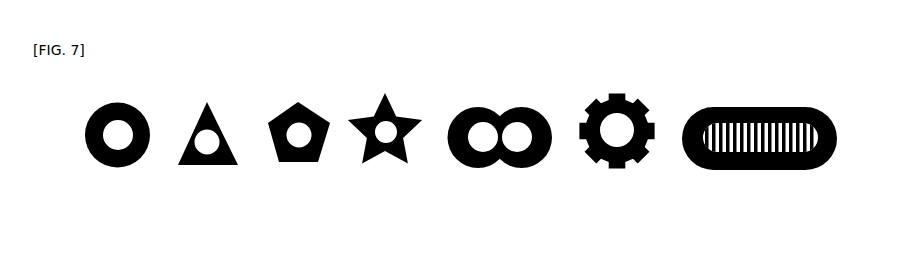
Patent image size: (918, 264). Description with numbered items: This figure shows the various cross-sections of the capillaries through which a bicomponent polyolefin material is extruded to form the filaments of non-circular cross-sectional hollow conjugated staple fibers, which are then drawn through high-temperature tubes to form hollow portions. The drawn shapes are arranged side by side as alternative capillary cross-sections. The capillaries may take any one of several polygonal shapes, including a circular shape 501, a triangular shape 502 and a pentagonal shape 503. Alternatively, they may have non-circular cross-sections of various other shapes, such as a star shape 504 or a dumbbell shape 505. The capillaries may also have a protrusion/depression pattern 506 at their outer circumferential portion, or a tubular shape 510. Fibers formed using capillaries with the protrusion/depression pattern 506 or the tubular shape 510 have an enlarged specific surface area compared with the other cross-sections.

The circular shape 501 is at (106, 163).
The triangular shape 502 is at (190, 164).
The pentagonal shape 503 is at (293, 164).
The star shape 504 is at (375, 160).
The dumbbell shape 505 is at (453, 163).
The protrusion/depression pattern 506 is at (592, 163).
The tubular shape 510 is at (685, 158).